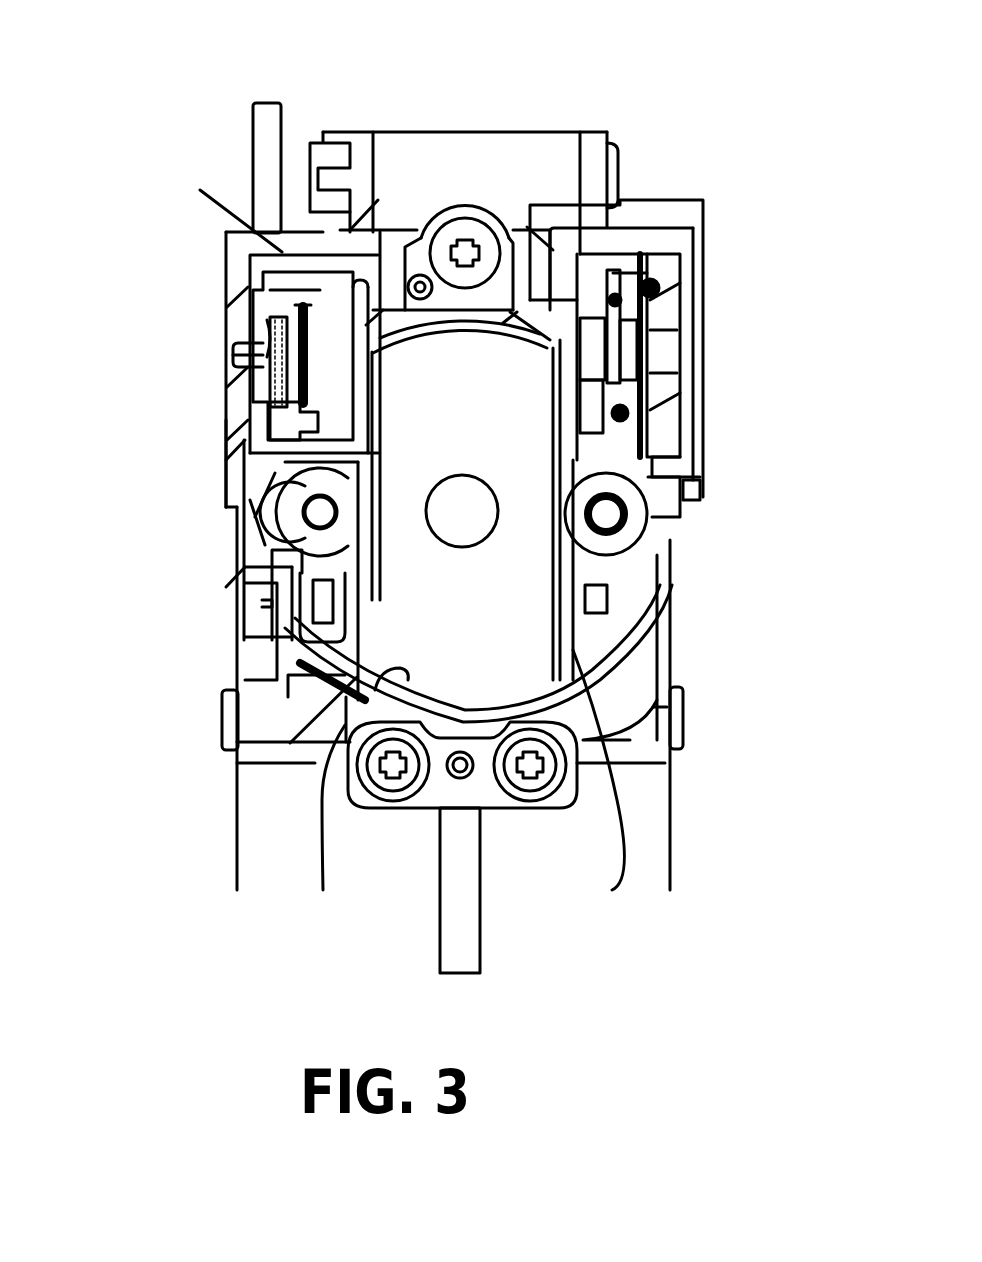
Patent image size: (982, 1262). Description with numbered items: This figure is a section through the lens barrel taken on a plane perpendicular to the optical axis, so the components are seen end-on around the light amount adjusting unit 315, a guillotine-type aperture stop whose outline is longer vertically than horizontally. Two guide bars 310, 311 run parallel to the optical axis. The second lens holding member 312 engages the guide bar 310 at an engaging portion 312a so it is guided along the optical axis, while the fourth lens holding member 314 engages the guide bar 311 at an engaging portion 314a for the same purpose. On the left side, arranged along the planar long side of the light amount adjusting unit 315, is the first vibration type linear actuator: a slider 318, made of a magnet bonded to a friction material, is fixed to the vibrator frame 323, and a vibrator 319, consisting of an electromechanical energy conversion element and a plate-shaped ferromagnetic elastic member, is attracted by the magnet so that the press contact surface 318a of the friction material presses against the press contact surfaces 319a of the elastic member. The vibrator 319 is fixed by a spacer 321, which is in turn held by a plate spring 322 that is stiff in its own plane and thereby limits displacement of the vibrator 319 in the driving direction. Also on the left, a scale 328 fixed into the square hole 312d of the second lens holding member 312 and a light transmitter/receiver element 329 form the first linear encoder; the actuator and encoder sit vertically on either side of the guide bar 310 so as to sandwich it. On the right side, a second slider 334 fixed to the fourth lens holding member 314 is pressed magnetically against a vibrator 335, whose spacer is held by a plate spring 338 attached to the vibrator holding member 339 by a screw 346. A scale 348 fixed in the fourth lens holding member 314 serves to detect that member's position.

The second lens holding member 312 is at (357, 420).
The slider 334 is at (590, 380).
The vibrator holding member 339 is at (705, 232).
The vibrator frame 323 is at (250, 265).
The plate spring 338 is at (658, 302).
The press contact surface 318a is at (232, 345).
The press contact surfaces 319a is at (245, 340).
The vibrator 335 is at (680, 310).
The slider 318 is at (220, 356).
The screw 346 is at (680, 368).
The vibrator 319 is at (247, 380).
The spacer 321 is at (245, 440).
The plate spring 322 is at (245, 505).
The guide bar 311 is at (647, 512).
The engaging portion 312a is at (265, 545).
The guide bar 310 is at (300, 598).
The engaging portion 314a is at (608, 595).
The light transmitter/receiver element 329 is at (245, 633).
The scale 348 is at (665, 652).
The scale 328 is at (238, 660).
The square hole 312d is at (305, 672).
The light amount adjusting unit 315 is at (320, 900).
The fourth lens holding member 314 is at (613, 900).